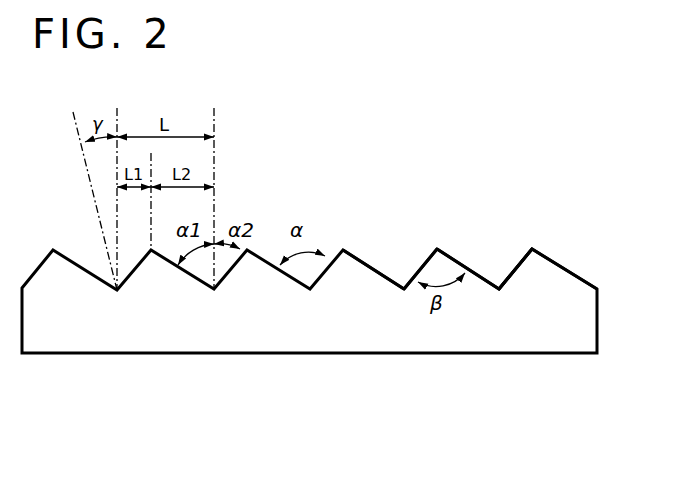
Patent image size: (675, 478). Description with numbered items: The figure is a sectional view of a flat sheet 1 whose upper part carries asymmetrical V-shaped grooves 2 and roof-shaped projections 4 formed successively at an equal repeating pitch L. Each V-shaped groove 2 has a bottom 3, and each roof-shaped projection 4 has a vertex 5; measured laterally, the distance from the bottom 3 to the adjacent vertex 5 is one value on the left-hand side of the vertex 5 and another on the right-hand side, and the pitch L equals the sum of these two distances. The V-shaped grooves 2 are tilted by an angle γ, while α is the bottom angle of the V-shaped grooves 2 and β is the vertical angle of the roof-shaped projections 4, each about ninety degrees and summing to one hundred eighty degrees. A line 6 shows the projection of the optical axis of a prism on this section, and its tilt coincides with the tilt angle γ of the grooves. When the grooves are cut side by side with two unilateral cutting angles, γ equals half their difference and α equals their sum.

The flat sheet 1 is at (309, 360).
The V-shaped groove 2 is at (402, 266).
The bottom of V-shaped groove 3 is at (499, 290).
The roof-shaped projection 4 is at (537, 238).
The vertex of roof-shaped projection 5 is at (437, 248).
The projection of the optical axis of a prism 6 is at (82, 158).